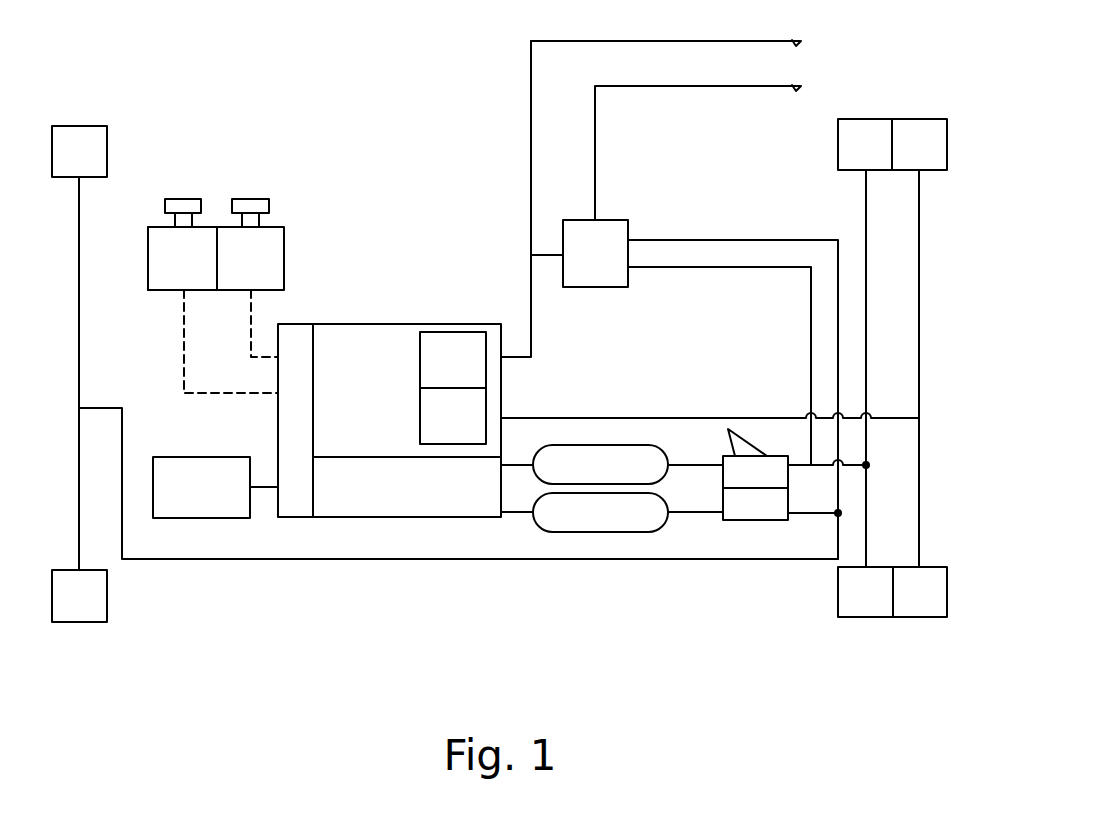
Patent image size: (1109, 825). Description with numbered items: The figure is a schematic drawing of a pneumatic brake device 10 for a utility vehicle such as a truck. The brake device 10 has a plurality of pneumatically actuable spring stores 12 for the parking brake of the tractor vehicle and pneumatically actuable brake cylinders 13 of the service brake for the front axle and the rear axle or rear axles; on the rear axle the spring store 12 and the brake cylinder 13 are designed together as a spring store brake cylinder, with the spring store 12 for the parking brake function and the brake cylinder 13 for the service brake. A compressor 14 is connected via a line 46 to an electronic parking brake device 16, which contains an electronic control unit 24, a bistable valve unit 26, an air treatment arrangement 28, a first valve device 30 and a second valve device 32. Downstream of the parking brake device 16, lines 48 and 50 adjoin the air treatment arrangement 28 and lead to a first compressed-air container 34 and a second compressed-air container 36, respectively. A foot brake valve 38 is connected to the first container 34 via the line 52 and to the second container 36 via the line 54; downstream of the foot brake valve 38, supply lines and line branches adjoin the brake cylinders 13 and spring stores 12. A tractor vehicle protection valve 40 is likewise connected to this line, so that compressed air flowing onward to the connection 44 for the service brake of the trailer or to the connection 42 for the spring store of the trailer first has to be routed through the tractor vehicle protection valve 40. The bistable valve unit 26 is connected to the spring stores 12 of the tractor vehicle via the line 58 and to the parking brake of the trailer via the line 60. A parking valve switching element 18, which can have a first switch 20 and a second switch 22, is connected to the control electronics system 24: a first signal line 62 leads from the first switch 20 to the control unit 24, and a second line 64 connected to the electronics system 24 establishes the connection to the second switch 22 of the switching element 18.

The pneumatic brake device 10 is at (380, 148).
The spring store 12 is at (924, 135).
The brake cylinder 13 is at (70, 138).
The compressor 14 is at (199, 468).
The electronic parking brake device 16 is at (418, 297).
The parking valve switching element 18 is at (213, 208).
The first switch 20 is at (173, 278).
The second switch 22 is at (279, 240).
The electronic control unit 24 is at (292, 490).
The bistable valve unit 26 is at (353, 340).
The air treatment arrangement 28 is at (391, 488).
The first valve device 30 is at (430, 422).
The second valve device 32 is at (466, 345).
The first compressed-air container 34 is at (620, 463).
The second compressed-air container 36 is at (605, 513).
The foot brake valve 38 is at (777, 470).
The tractor vehicle protection valve 40 is at (628, 222).
The connection for the spring store of a trailer 42 is at (685, 40).
The connection for the service brake of the trailer 44 is at (717, 145).
The line 46 is at (266, 490).
The line 48 is at (529, 514).
The line 50 is at (513, 466).
The line 52 is at (708, 462).
The line 54 is at (692, 515).
The line 58 is at (587, 418).
The line 60 is at (531, 108).
The first signal line 62 is at (184, 373).
The second line 64 is at (253, 325).